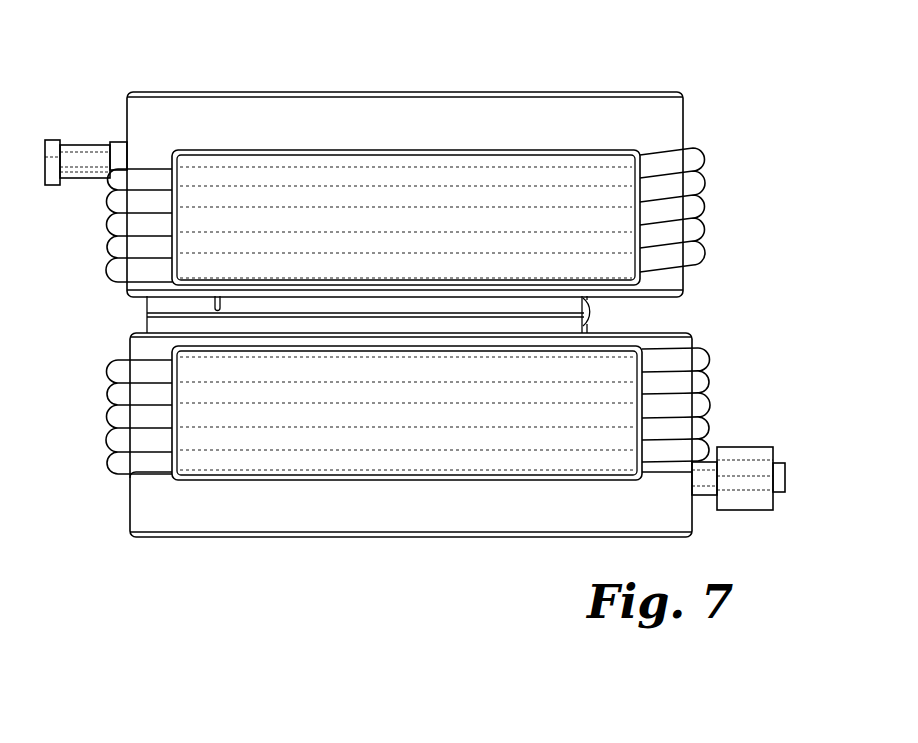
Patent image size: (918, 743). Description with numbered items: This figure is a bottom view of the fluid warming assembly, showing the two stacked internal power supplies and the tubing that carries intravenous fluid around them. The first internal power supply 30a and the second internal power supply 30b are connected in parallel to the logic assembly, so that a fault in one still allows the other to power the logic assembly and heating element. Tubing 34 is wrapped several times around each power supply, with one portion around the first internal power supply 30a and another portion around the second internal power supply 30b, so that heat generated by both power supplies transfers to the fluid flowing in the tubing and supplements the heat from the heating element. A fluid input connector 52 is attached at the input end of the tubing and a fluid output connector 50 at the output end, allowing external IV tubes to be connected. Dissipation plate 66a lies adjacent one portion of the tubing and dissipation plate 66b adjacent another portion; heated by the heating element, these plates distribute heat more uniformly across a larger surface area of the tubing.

The first internal power supply 30a is at (473, 513).
The second internal power supply 30b is at (548, 124).
The tubing 34 is at (692, 206).
The fluid output connector 50 is at (752, 498).
The fluid input connector 52 is at (78, 162).
The dissipation plate 66a is at (340, 452).
The dissipation plate 66b is at (373, 187).